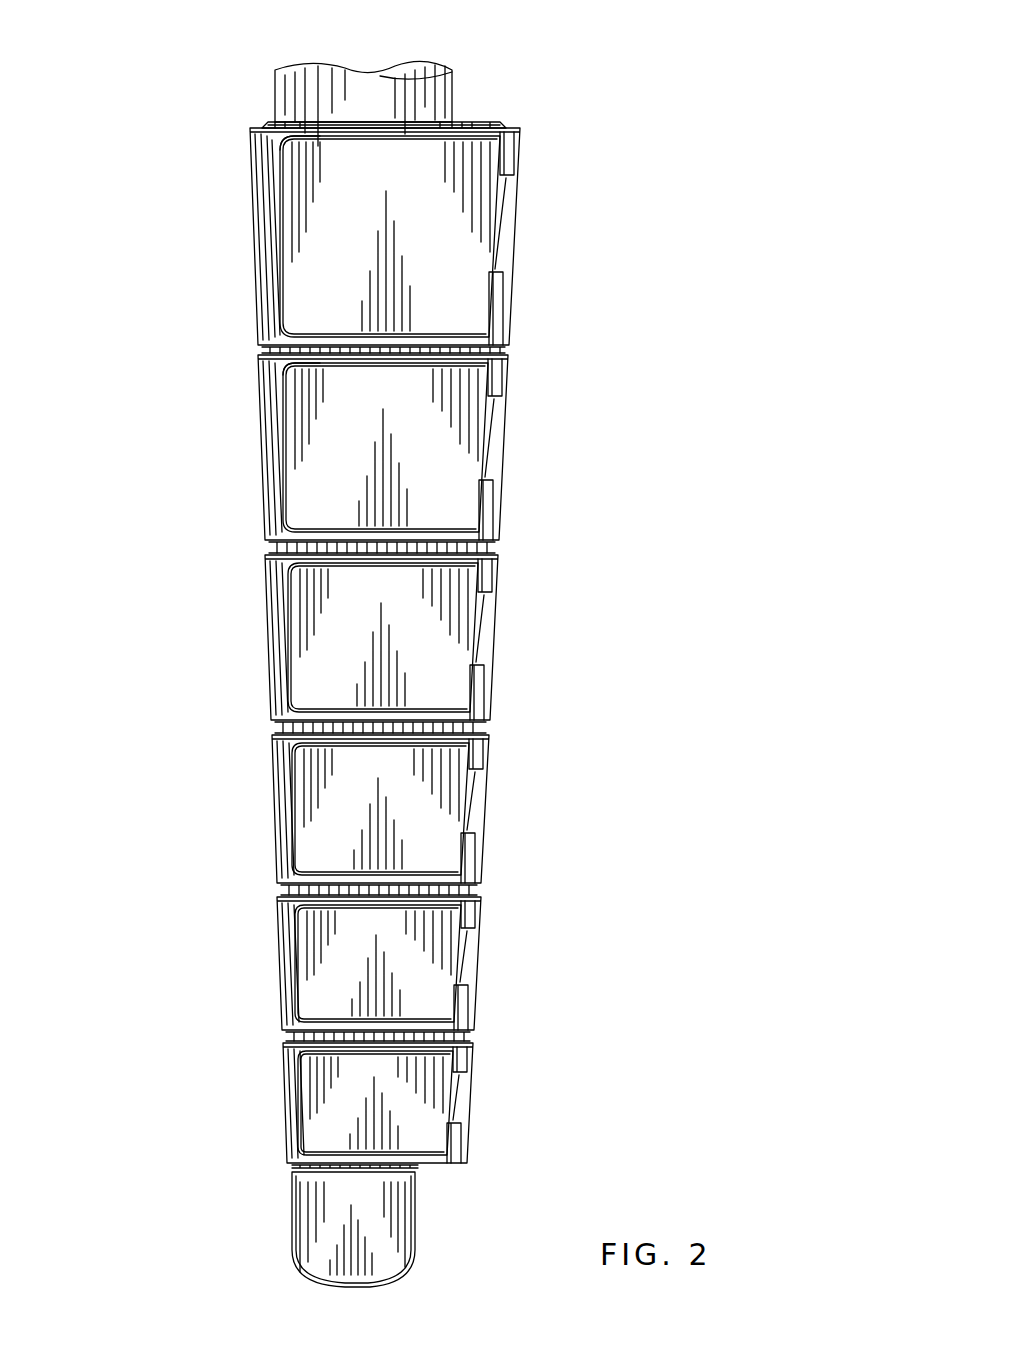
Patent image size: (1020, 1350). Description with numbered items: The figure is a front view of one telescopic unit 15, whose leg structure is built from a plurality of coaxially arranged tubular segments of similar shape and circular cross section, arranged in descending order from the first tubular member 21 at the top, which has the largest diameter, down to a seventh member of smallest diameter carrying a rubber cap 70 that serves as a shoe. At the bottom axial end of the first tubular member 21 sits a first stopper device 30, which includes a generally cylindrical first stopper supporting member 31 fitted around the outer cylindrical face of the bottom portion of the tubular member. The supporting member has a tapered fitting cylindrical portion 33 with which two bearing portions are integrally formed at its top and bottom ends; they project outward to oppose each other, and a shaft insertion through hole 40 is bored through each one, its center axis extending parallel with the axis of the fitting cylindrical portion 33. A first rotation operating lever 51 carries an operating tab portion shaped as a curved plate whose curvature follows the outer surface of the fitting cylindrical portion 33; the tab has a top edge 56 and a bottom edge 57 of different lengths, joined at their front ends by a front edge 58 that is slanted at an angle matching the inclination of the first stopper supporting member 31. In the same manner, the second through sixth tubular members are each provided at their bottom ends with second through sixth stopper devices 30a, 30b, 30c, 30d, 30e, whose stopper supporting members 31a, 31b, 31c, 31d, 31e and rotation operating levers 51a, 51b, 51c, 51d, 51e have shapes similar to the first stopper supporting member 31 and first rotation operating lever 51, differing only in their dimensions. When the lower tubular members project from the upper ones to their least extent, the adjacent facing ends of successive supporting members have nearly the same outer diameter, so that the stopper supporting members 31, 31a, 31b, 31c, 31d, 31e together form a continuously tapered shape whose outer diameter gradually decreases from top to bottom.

The telescopic unit 15 is at (562, 55).
The first tubular member 21 is at (460, 78).
The first stopper device 30 is at (380, 195).
The second stopper device 30a is at (376, 448).
The third stopper device 30b is at (389, 638).
The fourth stopper device 30c is at (387, 809).
The fifth stopper device 30d is at (380, 962).
The sixth stopper device 30e is at (379, 1110).
The first stopper supporting member 31 is at (250, 172).
The second stopper supporting member 31a is at (262, 459).
The third stopper supporting member 31b is at (272, 665).
The fourth stopper supporting member 31c is at (275, 827).
The fifth stopper supporting member 31d is at (280, 978).
The sixth stopper supporting member 31e is at (285, 1117).
The fitting cylindrical portion 33 is at (265, 205).
The shaft insertion through hole 40 is at (490, 123).
The first rotation operating lever 51 is at (280, 237).
The second rotation operating lever 51a is at (283, 487).
The third rotation operating lever 51b is at (285, 600).
The fourth rotation operating lever 51c is at (288, 765).
The fifth rotation operating lever 51d is at (285, 922).
The sixth rotation operating lever 51e is at (288, 1065).
The top edge 56 is at (320, 130).
The bottom edge 57 is at (305, 372).
The front edge 58 is at (280, 260).
The rubber cap 70 is at (292, 1222).